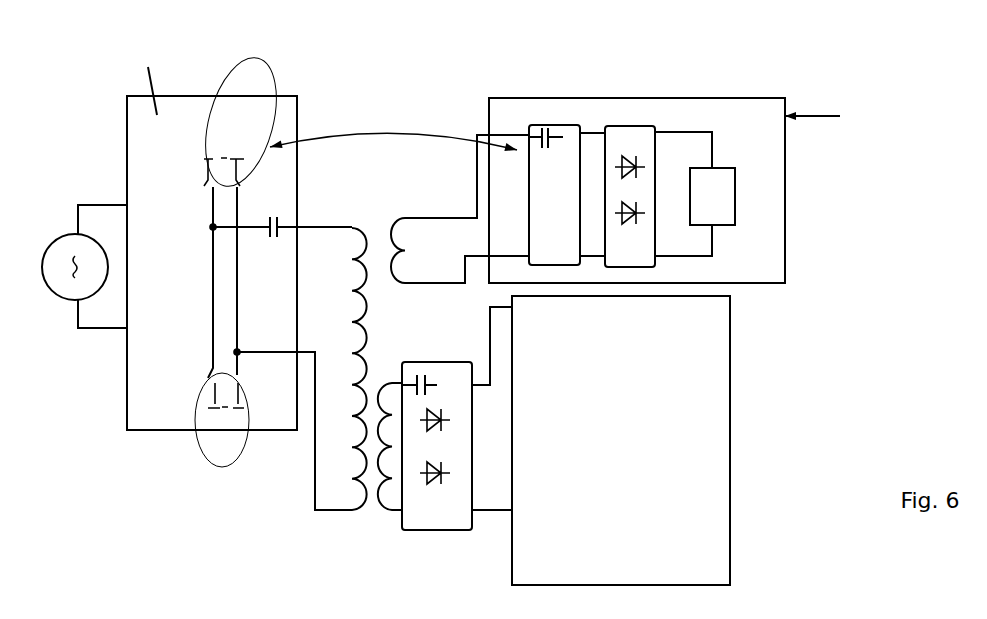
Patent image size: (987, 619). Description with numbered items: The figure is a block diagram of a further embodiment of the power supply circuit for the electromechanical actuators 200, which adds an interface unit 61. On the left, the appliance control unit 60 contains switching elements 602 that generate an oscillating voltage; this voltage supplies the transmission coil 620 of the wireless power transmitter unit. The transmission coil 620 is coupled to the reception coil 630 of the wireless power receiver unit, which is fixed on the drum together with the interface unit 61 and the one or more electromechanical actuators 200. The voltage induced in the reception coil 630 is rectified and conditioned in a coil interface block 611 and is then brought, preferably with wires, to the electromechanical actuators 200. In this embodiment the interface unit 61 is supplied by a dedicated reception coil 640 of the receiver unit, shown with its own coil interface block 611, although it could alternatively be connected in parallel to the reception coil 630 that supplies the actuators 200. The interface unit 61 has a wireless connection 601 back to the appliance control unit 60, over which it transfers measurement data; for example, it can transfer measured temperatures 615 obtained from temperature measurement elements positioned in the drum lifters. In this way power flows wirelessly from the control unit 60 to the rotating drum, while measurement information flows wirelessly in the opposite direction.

The appliance control unit 60 is at (195, 72).
The switching elements 602 is at (262, 58).
The wireless connection 601 is at (397, 130).
The transmission coil 620 is at (356, 320).
The reception coil 630 is at (382, 473).
The dedicated reception coil 640 is at (417, 212).
The interface unit 61 is at (622, 68).
The coil interface block 611 is at (568, 123).
The measured temperatures 615 is at (812, 113).
The electromechanical actuators 200 is at (601, 440).